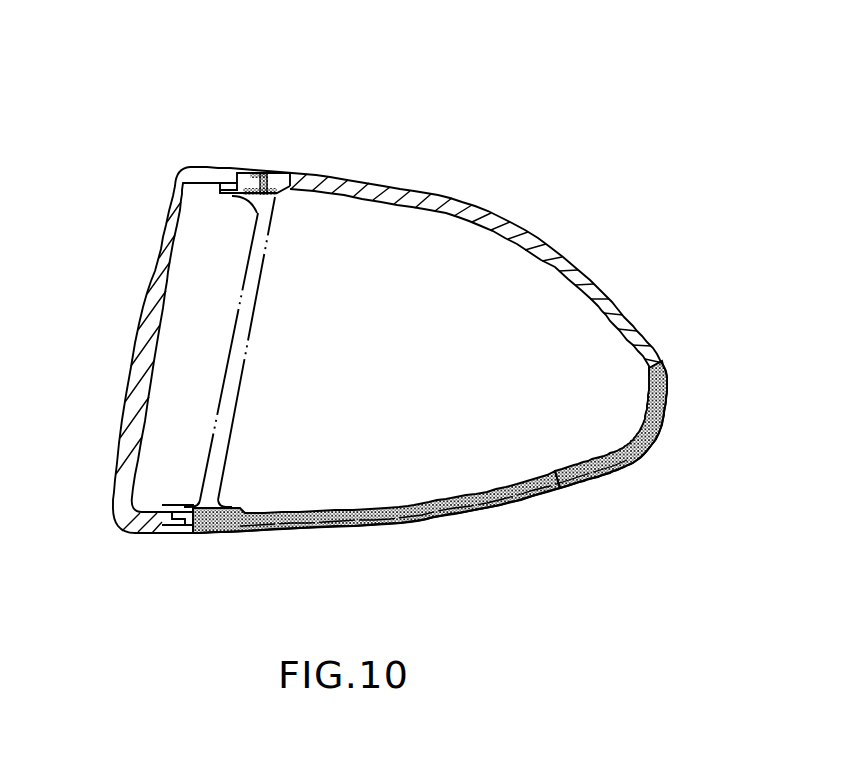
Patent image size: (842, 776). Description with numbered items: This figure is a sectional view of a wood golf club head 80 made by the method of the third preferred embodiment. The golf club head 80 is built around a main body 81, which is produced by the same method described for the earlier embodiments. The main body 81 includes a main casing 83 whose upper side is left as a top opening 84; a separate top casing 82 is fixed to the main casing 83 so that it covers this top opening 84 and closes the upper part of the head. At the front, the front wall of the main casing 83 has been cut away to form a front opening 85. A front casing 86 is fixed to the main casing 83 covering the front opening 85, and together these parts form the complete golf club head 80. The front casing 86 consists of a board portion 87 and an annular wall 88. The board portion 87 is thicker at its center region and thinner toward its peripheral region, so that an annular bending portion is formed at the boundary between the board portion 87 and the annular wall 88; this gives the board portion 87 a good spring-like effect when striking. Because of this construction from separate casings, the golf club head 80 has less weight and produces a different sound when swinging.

The golf club head 80 is at (385, 303).
The main body 81 is at (646, 466).
The top casing 82 is at (497, 213).
The main casing 83 is at (653, 435).
The top opening 84 is at (435, 227).
The front opening 85 is at (246, 381).
The front casing 86 is at (138, 295).
The board portion 87 is at (153, 252).
The annular wall 88 is at (212, 167).